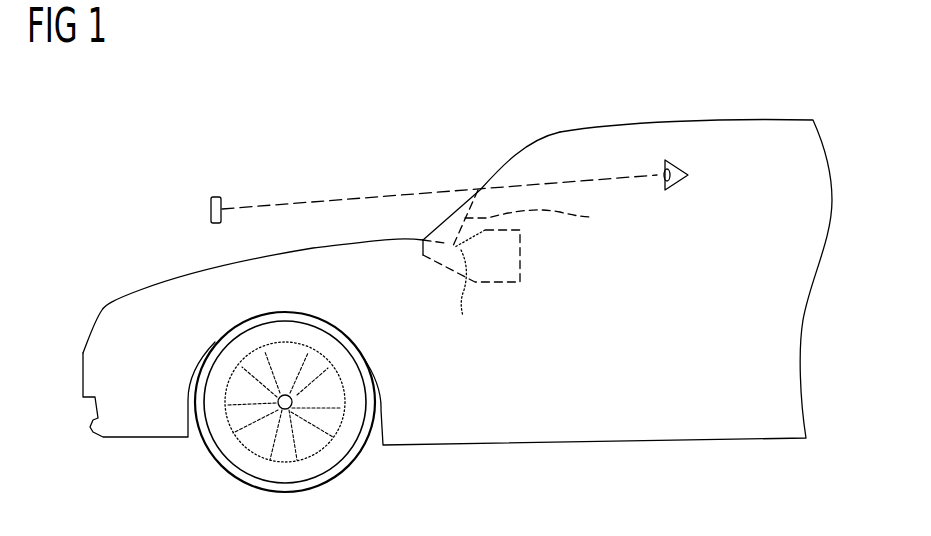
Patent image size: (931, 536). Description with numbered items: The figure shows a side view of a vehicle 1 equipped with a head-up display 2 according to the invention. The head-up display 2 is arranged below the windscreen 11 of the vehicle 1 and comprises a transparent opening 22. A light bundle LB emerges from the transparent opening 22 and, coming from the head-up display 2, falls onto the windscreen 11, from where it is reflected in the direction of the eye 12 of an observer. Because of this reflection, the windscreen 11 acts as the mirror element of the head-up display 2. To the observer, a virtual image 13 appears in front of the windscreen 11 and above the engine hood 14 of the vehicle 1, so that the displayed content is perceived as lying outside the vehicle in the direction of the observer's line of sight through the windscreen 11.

The vehicle 1 is at (617, 108).
The windscreen 11 is at (503, 158).
The eye 12 is at (676, 162).
The virtual image 13 is at (216, 197).
The engine hood 14 is at (148, 282).
The head-up display 2 is at (520, 265).
The transparent opening 22 is at (470, 290).
The light bundle LB is at (543, 218).